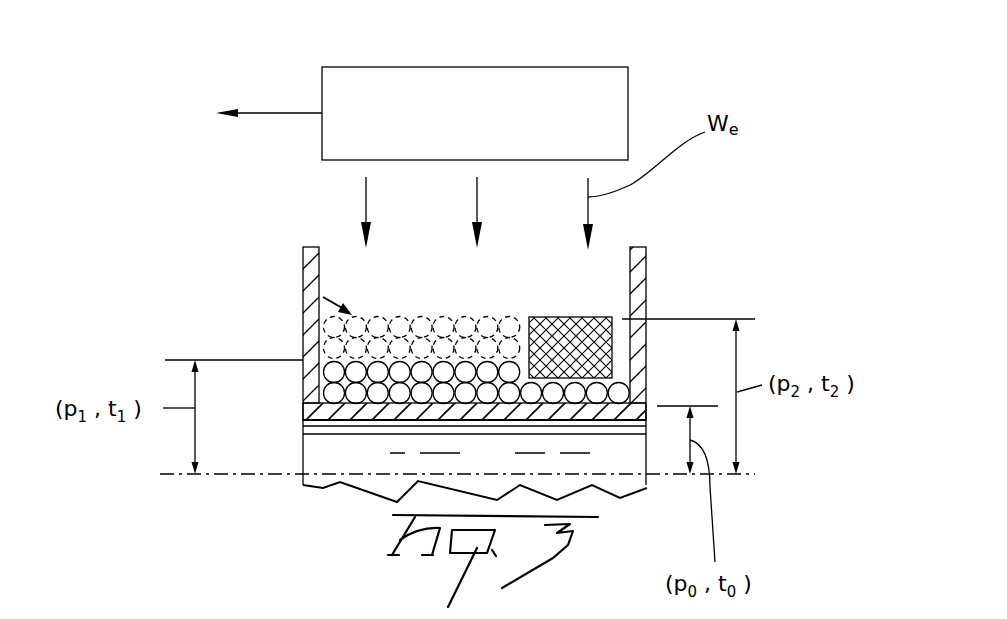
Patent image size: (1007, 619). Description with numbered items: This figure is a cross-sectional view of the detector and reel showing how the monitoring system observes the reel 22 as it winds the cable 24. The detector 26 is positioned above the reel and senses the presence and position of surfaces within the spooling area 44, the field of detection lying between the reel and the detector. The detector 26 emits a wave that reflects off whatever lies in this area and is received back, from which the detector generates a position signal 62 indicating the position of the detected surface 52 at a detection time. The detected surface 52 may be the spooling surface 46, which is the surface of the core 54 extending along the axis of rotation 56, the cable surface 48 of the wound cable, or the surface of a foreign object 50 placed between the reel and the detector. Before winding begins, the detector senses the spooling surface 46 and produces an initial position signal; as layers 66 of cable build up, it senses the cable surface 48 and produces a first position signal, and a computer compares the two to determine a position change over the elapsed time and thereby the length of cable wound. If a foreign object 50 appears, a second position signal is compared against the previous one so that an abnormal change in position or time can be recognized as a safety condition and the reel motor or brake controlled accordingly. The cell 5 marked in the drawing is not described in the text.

The sample cell / container 5 is at (303, 259).
The reel 22 is at (303, 483).
The cable 24 is at (330, 392).
The detector 26 is at (492, 147).
The spooling area 44 is at (347, 236).
The spooling surface 46 is at (376, 420).
The cable surface 48 is at (252, 360).
The foreign object 50 is at (585, 317).
The detected surface 52 is at (722, 319).
The core 54 is at (437, 415).
The axis of rotation 56 is at (750, 477).
The position signal 62 is at (288, 113).
The layers of cable 66 is at (303, 292).